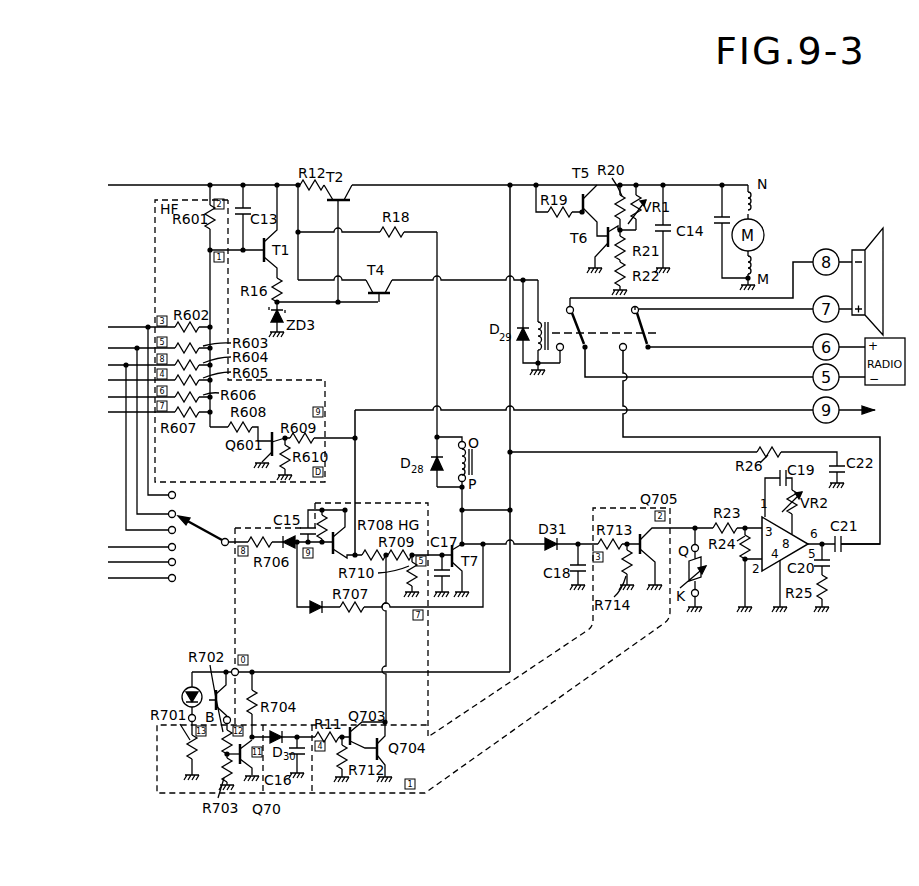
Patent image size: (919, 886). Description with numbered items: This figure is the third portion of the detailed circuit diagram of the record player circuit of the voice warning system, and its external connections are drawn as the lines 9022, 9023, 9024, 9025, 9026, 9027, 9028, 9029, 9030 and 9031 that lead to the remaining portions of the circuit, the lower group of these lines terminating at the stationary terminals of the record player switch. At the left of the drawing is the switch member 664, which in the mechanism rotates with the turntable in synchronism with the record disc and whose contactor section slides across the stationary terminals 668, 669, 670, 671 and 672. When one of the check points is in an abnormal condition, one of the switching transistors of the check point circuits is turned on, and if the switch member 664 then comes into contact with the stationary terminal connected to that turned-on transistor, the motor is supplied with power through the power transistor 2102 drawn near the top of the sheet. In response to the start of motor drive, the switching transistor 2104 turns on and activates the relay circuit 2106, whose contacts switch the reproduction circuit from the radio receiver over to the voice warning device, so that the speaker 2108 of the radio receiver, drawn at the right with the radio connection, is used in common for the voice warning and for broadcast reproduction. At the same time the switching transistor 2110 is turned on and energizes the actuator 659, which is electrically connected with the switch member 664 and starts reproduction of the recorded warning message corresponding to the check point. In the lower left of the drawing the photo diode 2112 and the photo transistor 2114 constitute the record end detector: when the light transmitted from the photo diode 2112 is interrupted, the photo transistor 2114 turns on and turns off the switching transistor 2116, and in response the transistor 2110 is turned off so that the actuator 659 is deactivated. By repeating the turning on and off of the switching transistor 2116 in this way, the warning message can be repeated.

The power supply line 9022 is at (405, 185).
The input signal line 9023 is at (136, 327).
The input signal line 9024 is at (136, 348).
The input signal line 9025 is at (136, 365).
The input signal line 9026 is at (136, 380).
The input signal line 9027 is at (136, 397).
The input signal line 9028 is at (136, 412).
The input signal line 9029 is at (115, 547).
The input signal line 9030 is at (115, 562).
The input signal line 9031 is at (115, 578).
The actuator 659 is at (444, 432).
The switch member 664 is at (216, 534).
The stationary terminal 668 is at (176, 532).
The stationary terminal 669 is at (176, 549).
The stationary terminal 670 is at (176, 565).
The stationary terminal 671 is at (176, 494).
The stationary terminal 672 is at (176, 512).
The power transistor 2102 is at (350, 190).
The switching transistor 2104 is at (381, 288).
The relay circuit 2106 is at (570, 297).
The speaker 2108 is at (856, 250).
The switching transistor 2110 is at (472, 558).
The photo diode 2112 is at (184, 690).
The photo transistor 2114 is at (222, 703).
The switching transistor 2116 is at (389, 737).